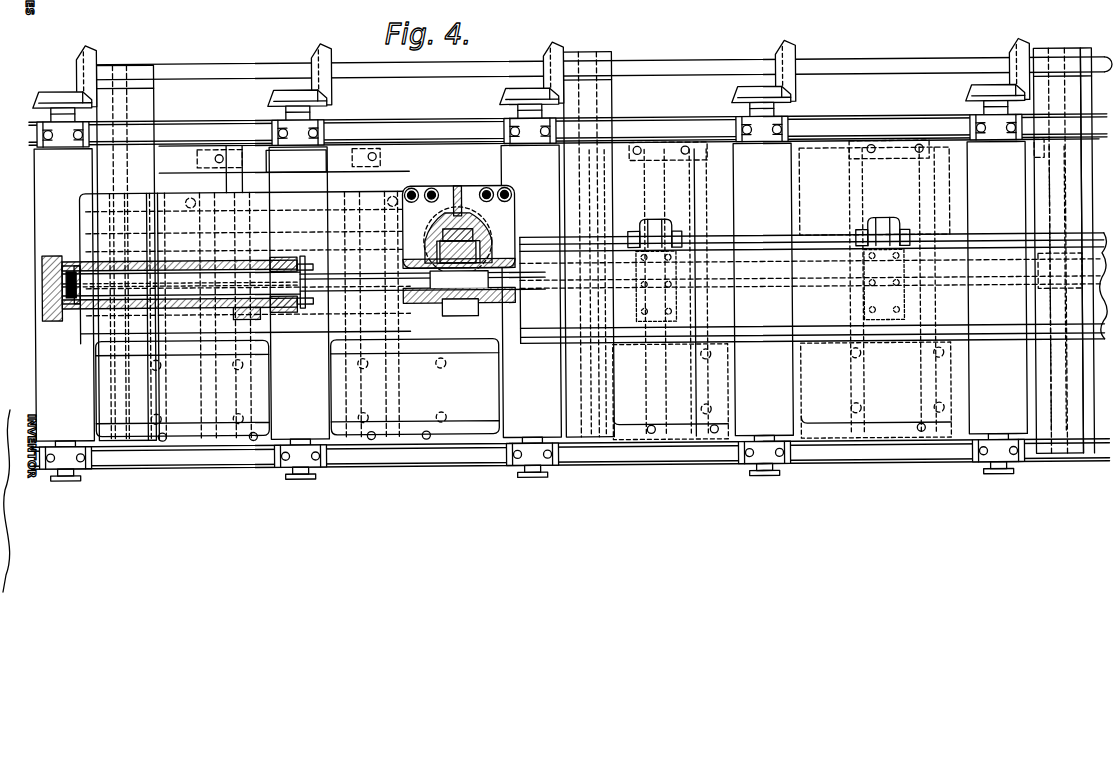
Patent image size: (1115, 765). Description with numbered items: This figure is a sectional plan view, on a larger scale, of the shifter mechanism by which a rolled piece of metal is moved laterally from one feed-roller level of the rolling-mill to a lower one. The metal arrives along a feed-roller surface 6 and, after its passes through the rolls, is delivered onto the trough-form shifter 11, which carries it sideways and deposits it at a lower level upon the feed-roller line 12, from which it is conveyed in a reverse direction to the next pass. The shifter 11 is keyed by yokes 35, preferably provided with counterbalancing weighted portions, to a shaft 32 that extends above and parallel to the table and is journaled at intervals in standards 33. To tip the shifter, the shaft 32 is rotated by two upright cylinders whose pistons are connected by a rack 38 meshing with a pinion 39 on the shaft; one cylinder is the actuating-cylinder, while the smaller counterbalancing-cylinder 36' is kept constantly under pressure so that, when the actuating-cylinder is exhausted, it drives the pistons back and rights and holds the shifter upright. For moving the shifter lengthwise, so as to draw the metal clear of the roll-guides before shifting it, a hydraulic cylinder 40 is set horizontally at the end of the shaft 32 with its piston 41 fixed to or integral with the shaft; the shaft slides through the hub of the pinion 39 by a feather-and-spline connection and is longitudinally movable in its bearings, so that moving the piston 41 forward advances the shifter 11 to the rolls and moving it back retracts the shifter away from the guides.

The feed-roller surface 6 is at (415, 260).
The shifter 11 is at (814, 288).
The feed-roller line 12 is at (874, 191).
The shaft 32 is at (422, 281).
The standard 33 is at (1060, 283).
The yoke 35 is at (657, 220).
The counterbalancing-cylinder 36' is at (473, 244).
The rack 38 is at (459, 215).
The pinion 39 is at (458, 305).
The hydraulic cylinder 40 is at (44, 289).
The piston 41 is at (80, 318).